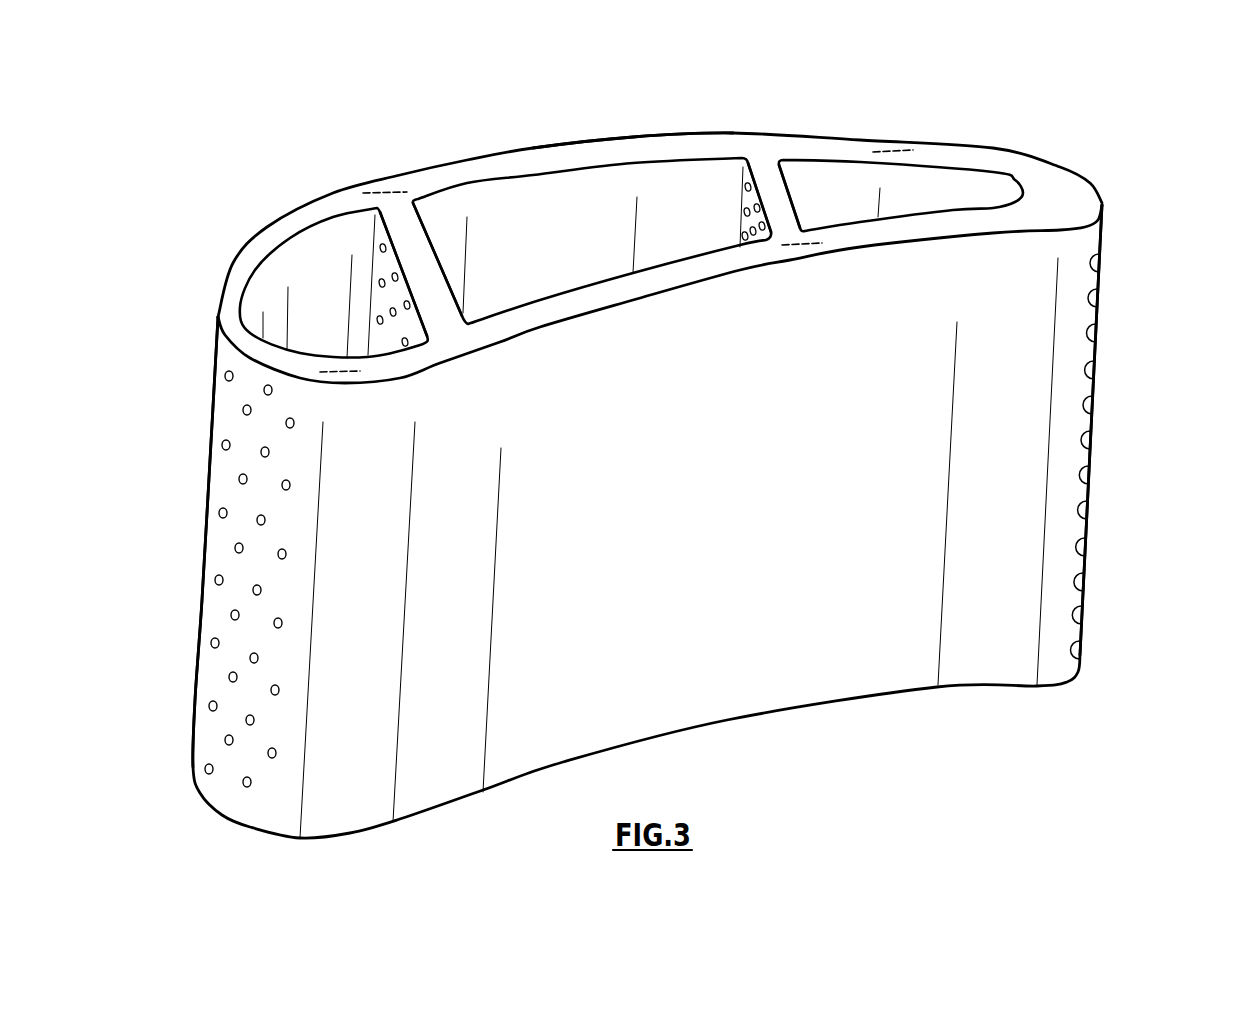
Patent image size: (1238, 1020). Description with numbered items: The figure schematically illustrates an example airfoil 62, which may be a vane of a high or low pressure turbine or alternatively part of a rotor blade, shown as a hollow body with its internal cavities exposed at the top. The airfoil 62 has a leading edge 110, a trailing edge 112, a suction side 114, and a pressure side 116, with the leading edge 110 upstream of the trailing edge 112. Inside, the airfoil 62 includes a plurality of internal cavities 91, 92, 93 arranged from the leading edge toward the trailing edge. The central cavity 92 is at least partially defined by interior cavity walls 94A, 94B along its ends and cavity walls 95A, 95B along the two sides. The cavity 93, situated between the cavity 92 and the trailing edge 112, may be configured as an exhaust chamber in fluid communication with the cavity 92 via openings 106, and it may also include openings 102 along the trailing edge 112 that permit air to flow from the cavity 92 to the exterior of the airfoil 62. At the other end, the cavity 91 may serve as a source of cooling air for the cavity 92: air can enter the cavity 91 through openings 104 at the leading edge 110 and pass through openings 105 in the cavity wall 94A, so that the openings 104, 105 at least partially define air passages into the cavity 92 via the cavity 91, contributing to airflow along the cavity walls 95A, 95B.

The airfoil 62 is at (722, 690).
The cavity 91 is at (303, 267).
The cavity 92 is at (502, 195).
The cavity 93 is at (912, 182).
The interior cavity wall 94A is at (430, 277).
The interior cavity wall 94B is at (780, 203).
The interior cavity wall 95A is at (560, 153).
The interior cavity wall 95B is at (630, 287).
The openings 102 is at (1093, 370).
The openings 104 is at (226, 445).
The openings 105 is at (393, 312).
The openings 106 is at (747, 213).
The leading edge 110 is at (200, 557).
The trailing edge 112 is at (1092, 458).
The suction side 114 is at (633, 137).
The pressure side 116 is at (706, 508).